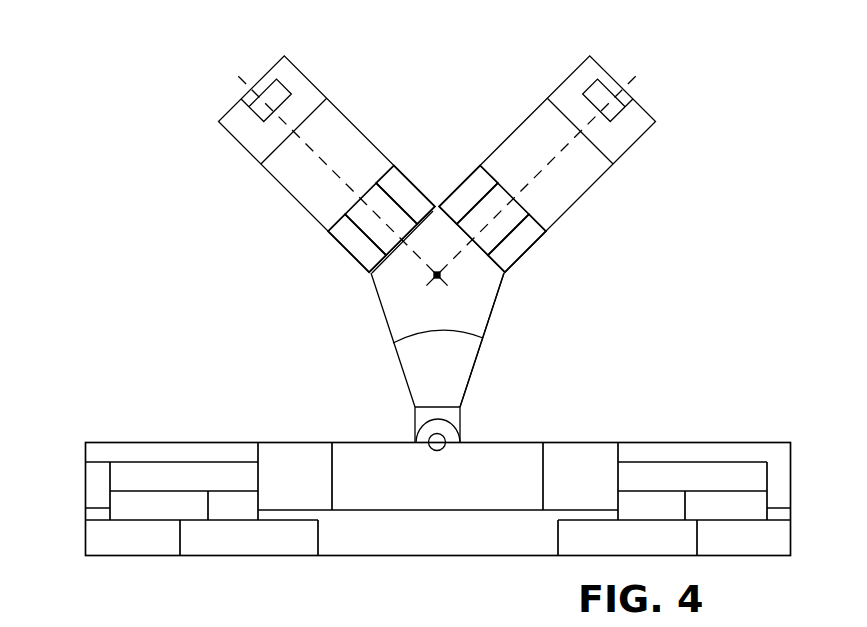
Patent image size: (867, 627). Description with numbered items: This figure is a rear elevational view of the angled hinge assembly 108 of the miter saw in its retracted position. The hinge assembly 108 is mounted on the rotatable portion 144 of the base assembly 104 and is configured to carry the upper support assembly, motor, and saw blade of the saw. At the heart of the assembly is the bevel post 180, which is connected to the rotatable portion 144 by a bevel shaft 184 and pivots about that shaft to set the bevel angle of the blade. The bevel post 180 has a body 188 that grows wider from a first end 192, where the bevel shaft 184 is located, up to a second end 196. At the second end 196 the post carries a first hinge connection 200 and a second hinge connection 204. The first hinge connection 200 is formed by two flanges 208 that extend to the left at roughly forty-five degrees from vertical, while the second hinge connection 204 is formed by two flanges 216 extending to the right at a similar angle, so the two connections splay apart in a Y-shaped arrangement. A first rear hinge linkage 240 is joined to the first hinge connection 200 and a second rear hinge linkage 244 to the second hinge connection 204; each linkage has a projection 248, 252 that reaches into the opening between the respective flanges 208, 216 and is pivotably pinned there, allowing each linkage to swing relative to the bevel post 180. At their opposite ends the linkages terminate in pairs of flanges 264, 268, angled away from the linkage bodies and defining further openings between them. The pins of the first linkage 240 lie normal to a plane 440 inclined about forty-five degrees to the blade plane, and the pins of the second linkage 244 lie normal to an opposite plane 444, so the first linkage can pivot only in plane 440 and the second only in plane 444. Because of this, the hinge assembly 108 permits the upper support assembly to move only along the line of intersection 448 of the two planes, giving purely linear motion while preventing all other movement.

The hinge assembly 108 is at (215, 51).
The base assembly 104 is at (438, 491).
The rotatable portion 144 is at (570, 458).
The bevel post 180 is at (445, 362).
The bevel shaft 184 is at (446, 437).
The body 188 is at (490, 310).
The first end 192 is at (417, 408).
The second end 196 is at (433, 232).
The first hinge connection 200 is at (338, 262).
The second hinge connection 204 is at (527, 260).
The flanges 208 is at (388, 178).
The flanges 216 is at (490, 182).
The first rear hinge linkage 240 is at (323, 112).
The second rear hinge linkage 244 is at (551, 112).
The projection 248 is at (373, 205).
The projection 252 is at (513, 213).
The flanges 264 is at (242, 127).
The flanges 268 is at (632, 127).
The plane 440 is at (236, 75).
The plane 444 is at (638, 75).
The line of intersection 448 is at (441, 276).